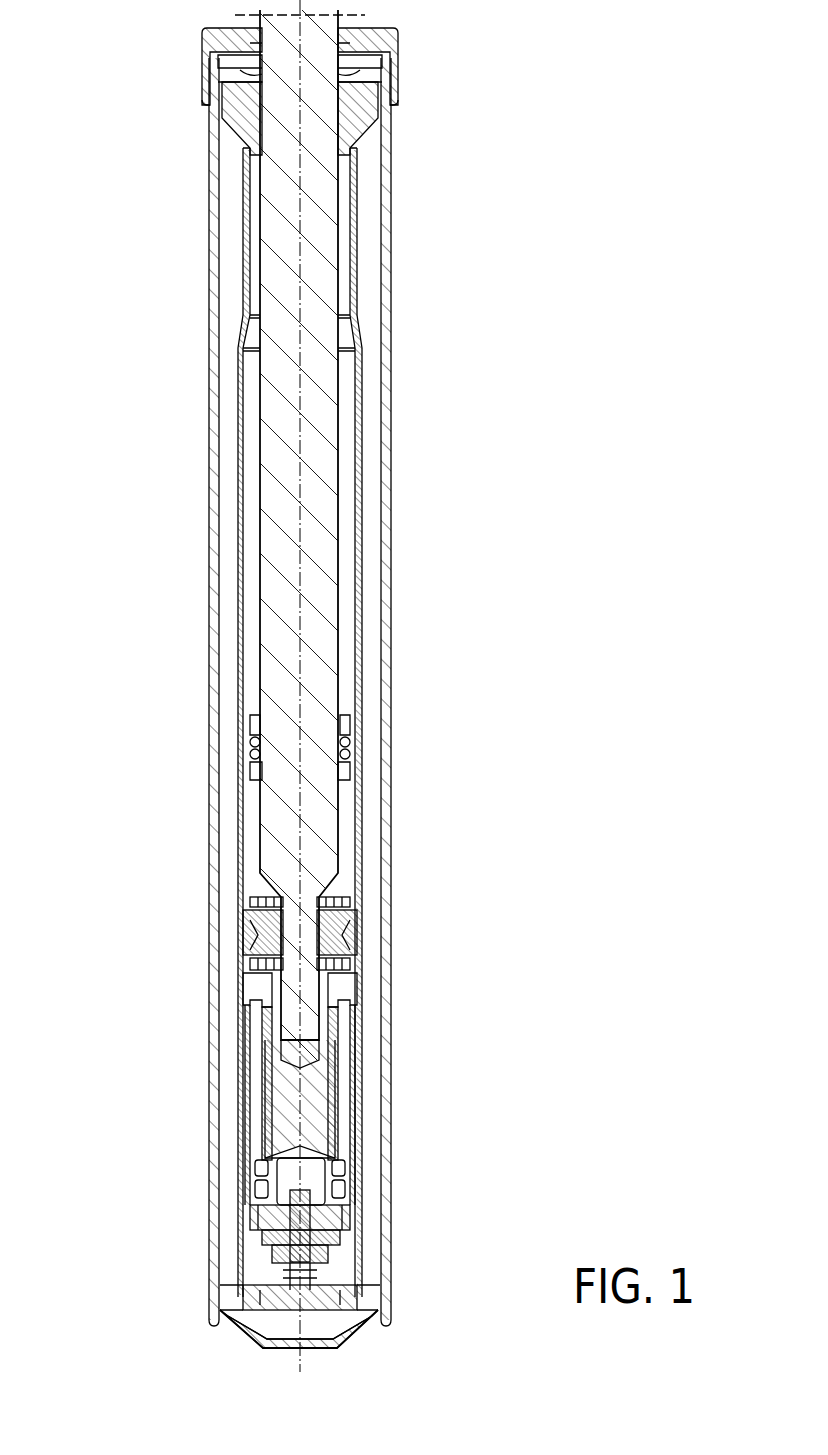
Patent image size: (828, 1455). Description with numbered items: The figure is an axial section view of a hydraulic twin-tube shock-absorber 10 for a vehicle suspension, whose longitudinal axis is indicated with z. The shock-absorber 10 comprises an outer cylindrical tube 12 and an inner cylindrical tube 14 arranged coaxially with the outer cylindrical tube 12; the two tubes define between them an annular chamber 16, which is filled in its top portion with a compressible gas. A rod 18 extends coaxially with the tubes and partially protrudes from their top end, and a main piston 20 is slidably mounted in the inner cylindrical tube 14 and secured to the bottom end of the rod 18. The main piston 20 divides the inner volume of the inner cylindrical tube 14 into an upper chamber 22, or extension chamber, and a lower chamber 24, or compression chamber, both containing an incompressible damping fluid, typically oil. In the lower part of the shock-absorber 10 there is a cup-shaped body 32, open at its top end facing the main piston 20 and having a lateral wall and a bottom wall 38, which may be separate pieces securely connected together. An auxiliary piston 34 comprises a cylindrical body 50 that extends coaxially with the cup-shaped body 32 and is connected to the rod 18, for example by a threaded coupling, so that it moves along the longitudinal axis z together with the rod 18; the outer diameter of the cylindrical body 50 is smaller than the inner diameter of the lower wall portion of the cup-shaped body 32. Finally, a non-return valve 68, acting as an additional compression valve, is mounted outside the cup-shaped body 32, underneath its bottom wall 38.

The hydraulic twin-tube shock-absorber 10 is at (170, 166).
The outer cylindrical tube 12 is at (388, 238).
The inner cylindrical tube 14 is at (360, 495).
The annular chamber 16 is at (367, 403).
The rod 18 is at (278, 292).
The main piston 20 is at (248, 935).
The upper chamber 22 is at (345, 587).
The lower chamber 24 is at (358, 1022).
The cup-shaped body 32 is at (360, 1095).
The auxiliary piston 34 is at (360, 1173).
The bottom wall 38 is at (355, 1218).
The cylindrical body 50 is at (290, 1115).
The non-return valve 68 is at (335, 1262).
The longitudinal axis z is at (300, 1357).